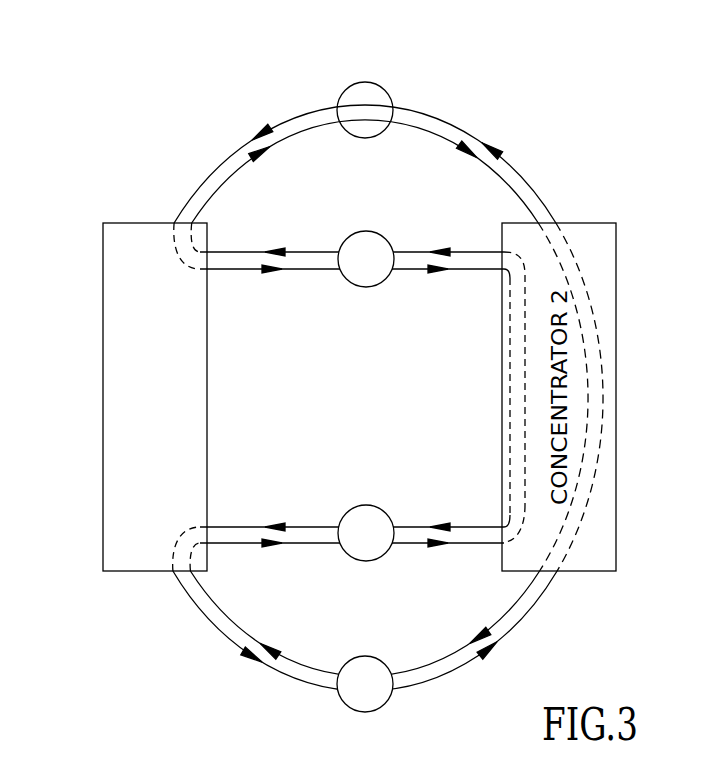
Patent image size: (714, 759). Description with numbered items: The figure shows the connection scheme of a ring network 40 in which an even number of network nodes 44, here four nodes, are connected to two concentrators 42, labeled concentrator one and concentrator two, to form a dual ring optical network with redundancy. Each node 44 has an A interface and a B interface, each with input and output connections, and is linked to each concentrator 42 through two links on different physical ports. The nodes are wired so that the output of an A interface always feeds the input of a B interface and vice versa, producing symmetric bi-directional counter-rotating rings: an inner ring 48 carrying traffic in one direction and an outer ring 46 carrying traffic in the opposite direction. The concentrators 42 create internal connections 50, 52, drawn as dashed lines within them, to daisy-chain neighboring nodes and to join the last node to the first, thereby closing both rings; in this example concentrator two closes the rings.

The ring network 40 is at (160, 648).
The concentrator 42 is at (122, 222).
The network node 44 is at (376, 83).
The outer ring 46 is at (452, 120).
The inner ring 48 is at (432, 133).
The internal connection 50 is at (545, 550).
The internal connection 52 is at (566, 566).